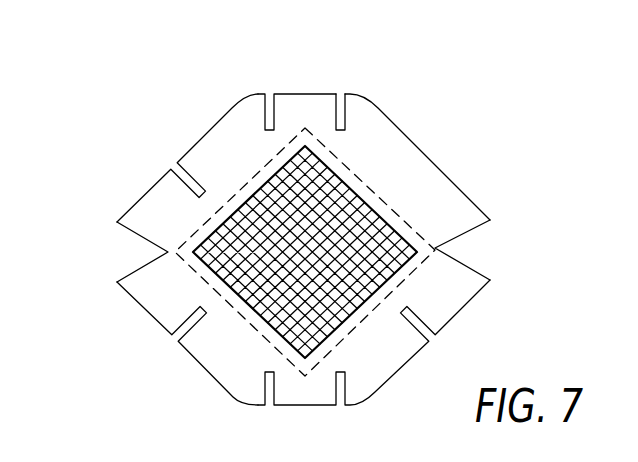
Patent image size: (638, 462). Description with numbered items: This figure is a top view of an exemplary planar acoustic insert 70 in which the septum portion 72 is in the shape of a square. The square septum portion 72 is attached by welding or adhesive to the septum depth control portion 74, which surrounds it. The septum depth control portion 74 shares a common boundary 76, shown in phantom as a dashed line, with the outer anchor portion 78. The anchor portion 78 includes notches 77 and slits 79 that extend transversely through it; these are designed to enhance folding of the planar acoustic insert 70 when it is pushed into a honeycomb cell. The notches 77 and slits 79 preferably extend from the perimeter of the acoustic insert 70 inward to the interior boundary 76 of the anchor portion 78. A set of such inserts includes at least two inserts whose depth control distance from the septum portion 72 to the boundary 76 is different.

The planar acoustic insert 70 is at (450, 180).
The septum portion 72 is at (222, 230).
The septum depth control portion 74 is at (202, 270).
The common boundary 76 is at (248, 323).
The notches 77 is at (470, 250).
The anchor portion 78 is at (230, 145).
The slits 79 is at (340, 95).